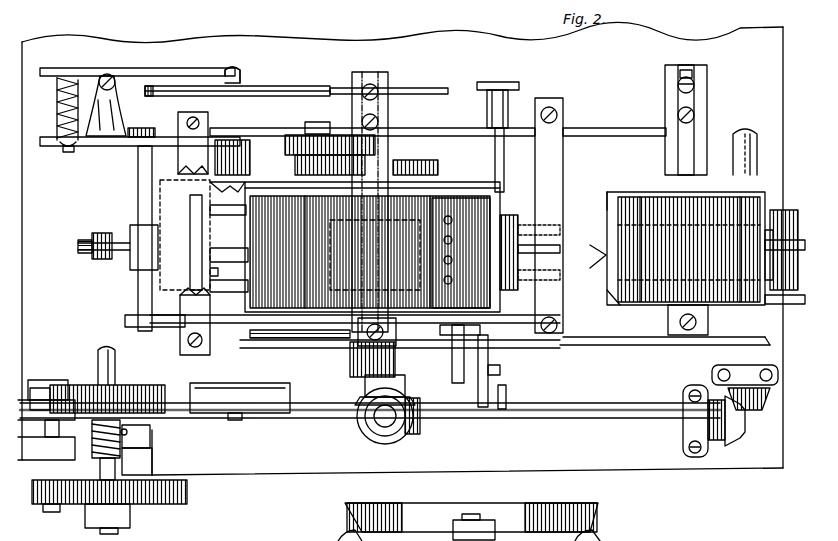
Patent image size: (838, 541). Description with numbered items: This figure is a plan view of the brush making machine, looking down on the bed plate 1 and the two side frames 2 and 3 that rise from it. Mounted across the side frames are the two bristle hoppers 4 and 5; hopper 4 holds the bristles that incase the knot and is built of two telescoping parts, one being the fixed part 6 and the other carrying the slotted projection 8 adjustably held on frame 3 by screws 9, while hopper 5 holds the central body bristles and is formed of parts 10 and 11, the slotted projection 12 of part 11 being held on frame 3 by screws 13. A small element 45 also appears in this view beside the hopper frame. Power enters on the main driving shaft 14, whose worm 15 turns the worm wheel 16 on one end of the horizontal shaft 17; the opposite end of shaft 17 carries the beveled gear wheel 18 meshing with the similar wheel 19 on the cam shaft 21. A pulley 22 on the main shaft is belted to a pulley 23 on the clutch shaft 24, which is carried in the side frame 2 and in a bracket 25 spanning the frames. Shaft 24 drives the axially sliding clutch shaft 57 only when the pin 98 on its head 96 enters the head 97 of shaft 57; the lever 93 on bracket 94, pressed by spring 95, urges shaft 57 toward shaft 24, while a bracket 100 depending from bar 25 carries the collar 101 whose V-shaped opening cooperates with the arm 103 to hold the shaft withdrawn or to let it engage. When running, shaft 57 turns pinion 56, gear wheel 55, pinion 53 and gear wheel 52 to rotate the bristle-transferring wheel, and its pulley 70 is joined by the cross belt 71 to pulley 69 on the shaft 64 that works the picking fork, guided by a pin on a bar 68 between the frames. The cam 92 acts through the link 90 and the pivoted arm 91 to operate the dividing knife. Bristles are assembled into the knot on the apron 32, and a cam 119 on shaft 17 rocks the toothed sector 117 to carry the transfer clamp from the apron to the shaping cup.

The bed plate 1 is at (388, 42).
The side frame 2 is at (604, 310).
The side frame 3 is at (600, 128).
The bristle hopper 4 is at (662, 200).
The bristle hopper 5 is at (455, 214).
The hopper part 6 is at (612, 296).
The slotted projection 8 is at (683, 120).
The screws 9 is at (678, 84).
The hopper part 10 is at (266, 316).
The hopper part 11 is at (402, 206).
The slotted projection 12 is at (382, 189).
The screws 13 is at (372, 72).
The main driving shaft 14 is at (98, 356).
The worm 15 is at (152, 455).
The worm wheel 16 is at (104, 444).
The horizontal shaft 17 is at (370, 409).
The beveled gear wheel 18 is at (734, 440).
The beveled gear wheel 19 is at (772, 405).
The cam shaft 21 is at (758, 160).
The pulley 22 is at (138, 388).
The pulley 23 is at (290, 400).
The clutch shaft 24 is at (236, 420).
The bracket 25 is at (185, 332).
The apron 32 is at (530, 244).
The spring 45 is at (595, 246).
The gear wheel 52 is at (428, 168).
The pinion 53 is at (330, 158).
The gear wheel 55 is at (393, 137).
The pinion 56 is at (238, 144).
The clutch shaft 57 is at (238, 76).
The shaft 64 is at (504, 172).
The bar 68 is at (564, 106).
The pulley 69 is at (488, 82).
The pulley 70 is at (272, 86).
The cross belt 71 is at (444, 88).
The link 90 is at (350, 384).
The arm 91 is at (418, 352).
The cam 92 is at (300, 346).
The lever 93 is at (172, 68).
The bracket 94 is at (112, 112).
The spring 95 is at (56, 108).
The head 96 is at (208, 286).
The head 97 is at (210, 257).
The pin 98 is at (208, 273).
The bracket 100 is at (210, 212).
The collar 101 is at (210, 190).
The arm 103 is at (205, 176).
The toothed sector 117 is at (478, 396).
The cam 119 is at (506, 392).